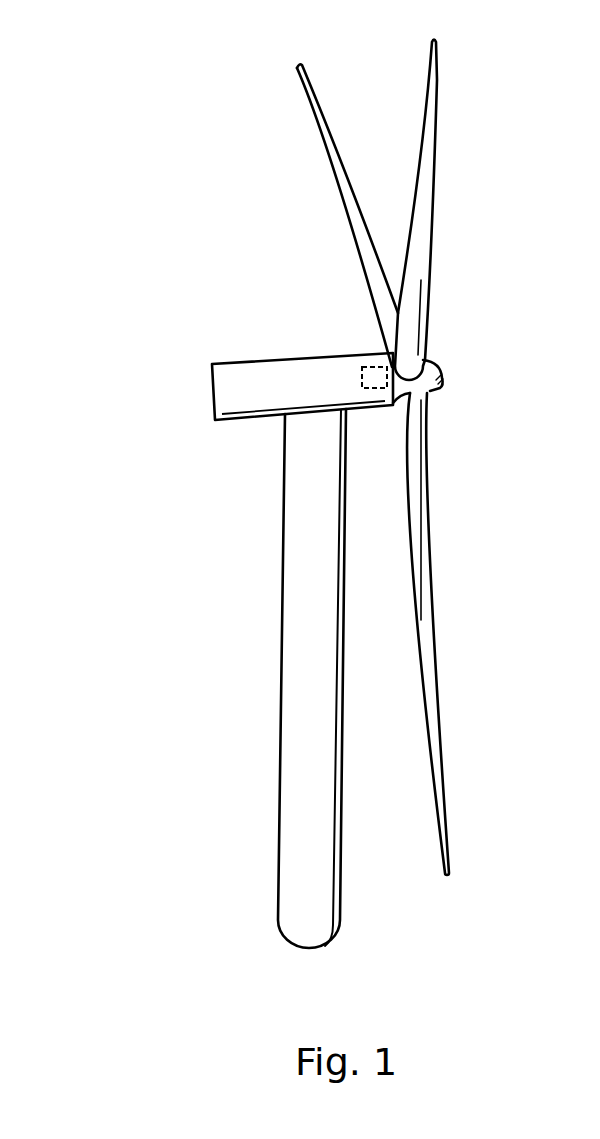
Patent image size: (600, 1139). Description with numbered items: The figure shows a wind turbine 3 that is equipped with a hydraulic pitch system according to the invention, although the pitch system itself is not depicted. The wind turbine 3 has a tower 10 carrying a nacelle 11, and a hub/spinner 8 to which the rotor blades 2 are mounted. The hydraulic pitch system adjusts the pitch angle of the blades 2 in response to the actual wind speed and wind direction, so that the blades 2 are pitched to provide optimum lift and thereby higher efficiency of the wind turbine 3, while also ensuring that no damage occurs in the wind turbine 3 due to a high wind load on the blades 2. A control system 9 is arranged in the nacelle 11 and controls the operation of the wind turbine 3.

The rotor blades 2 is at (313, 90).
The wind turbine 3 is at (133, 273).
The hub/spinner 8 is at (440, 385).
The control system 9 is at (367, 370).
The tower 10 is at (290, 785).
The nacelle 11 is at (222, 400).